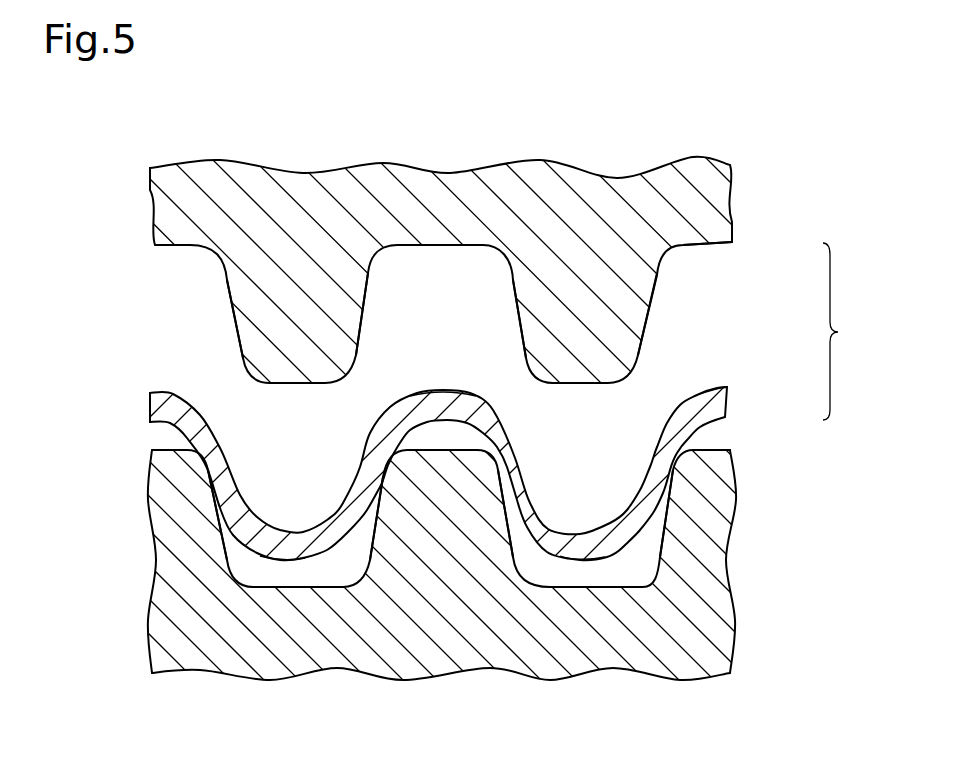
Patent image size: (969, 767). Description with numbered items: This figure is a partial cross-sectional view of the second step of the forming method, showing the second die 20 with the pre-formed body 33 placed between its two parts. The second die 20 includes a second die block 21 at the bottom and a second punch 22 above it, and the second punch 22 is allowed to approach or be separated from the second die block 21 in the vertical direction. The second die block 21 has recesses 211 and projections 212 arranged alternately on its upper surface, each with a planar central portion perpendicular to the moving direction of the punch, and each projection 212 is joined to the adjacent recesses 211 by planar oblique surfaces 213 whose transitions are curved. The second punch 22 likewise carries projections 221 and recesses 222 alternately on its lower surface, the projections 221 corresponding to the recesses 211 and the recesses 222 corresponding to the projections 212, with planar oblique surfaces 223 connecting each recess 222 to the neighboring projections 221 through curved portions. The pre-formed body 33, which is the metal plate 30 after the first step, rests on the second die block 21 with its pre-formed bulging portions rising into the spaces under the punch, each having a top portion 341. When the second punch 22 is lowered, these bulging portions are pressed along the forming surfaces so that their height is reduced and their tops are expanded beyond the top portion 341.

The second die 20 is at (845, 331).
The second die block 21 is at (730, 480).
The second punch 22 is at (738, 223).
The recess 211 is at (319, 587).
The projection 212 is at (163, 452).
The oblique surface 213 is at (226, 528).
The projection 221 is at (297, 384).
The recess 222 is at (166, 248).
The oblique surface 223 is at (228, 290).
The metal plate 30 is at (411, 465).
The pre-formed body 33 is at (162, 393).
The top portion 341 is at (444, 391).